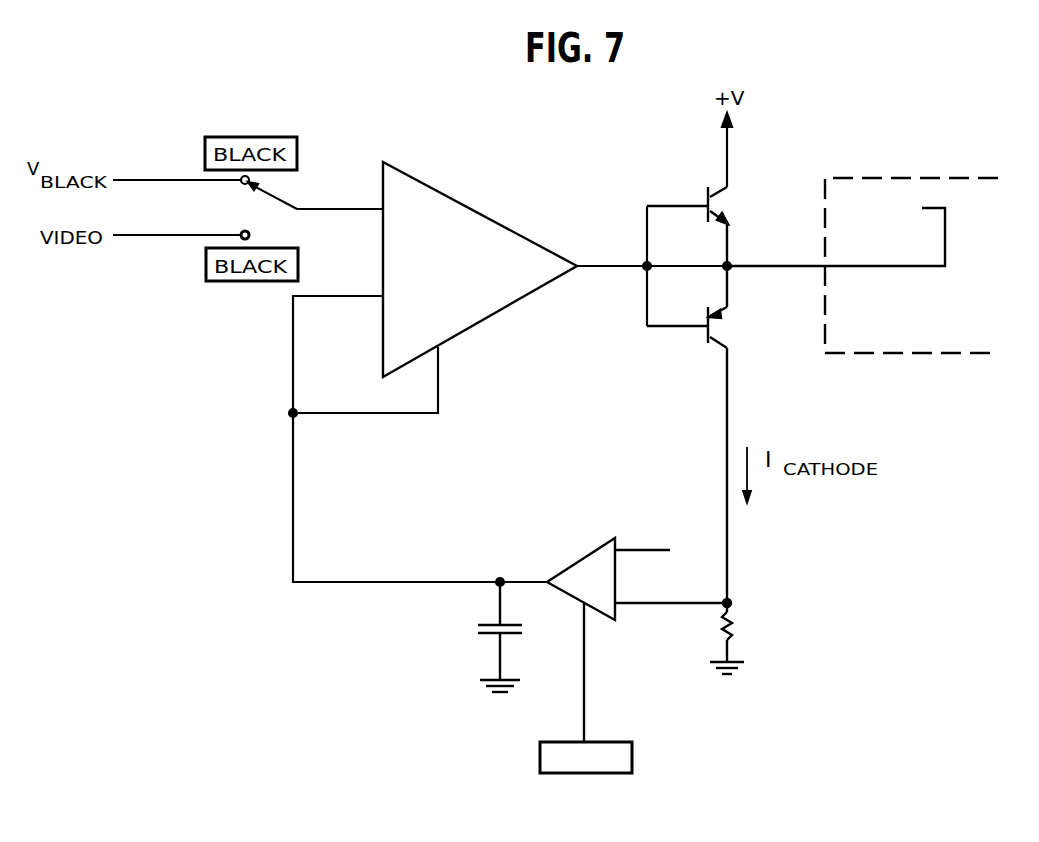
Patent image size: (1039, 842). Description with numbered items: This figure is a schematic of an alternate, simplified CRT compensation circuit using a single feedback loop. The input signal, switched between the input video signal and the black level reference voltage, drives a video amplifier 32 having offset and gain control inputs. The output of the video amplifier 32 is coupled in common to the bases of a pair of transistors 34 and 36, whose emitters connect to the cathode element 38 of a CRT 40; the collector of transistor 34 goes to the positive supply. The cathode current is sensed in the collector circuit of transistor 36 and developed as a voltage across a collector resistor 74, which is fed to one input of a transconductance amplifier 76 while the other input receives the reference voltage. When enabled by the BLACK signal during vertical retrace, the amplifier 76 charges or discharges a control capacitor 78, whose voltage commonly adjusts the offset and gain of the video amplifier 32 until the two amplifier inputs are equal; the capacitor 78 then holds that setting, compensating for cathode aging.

The video amplifier 32 is at (469, 219).
The transistor 34 is at (758, 216).
The transistor 36 is at (756, 340).
The cathode element 38 is at (762, 267).
The CRT 40 is at (876, 354).
The collector resistor 74 is at (735, 627).
The transconductance amplifier 76 is at (588, 567).
The control capacitor 78 is at (491, 625).